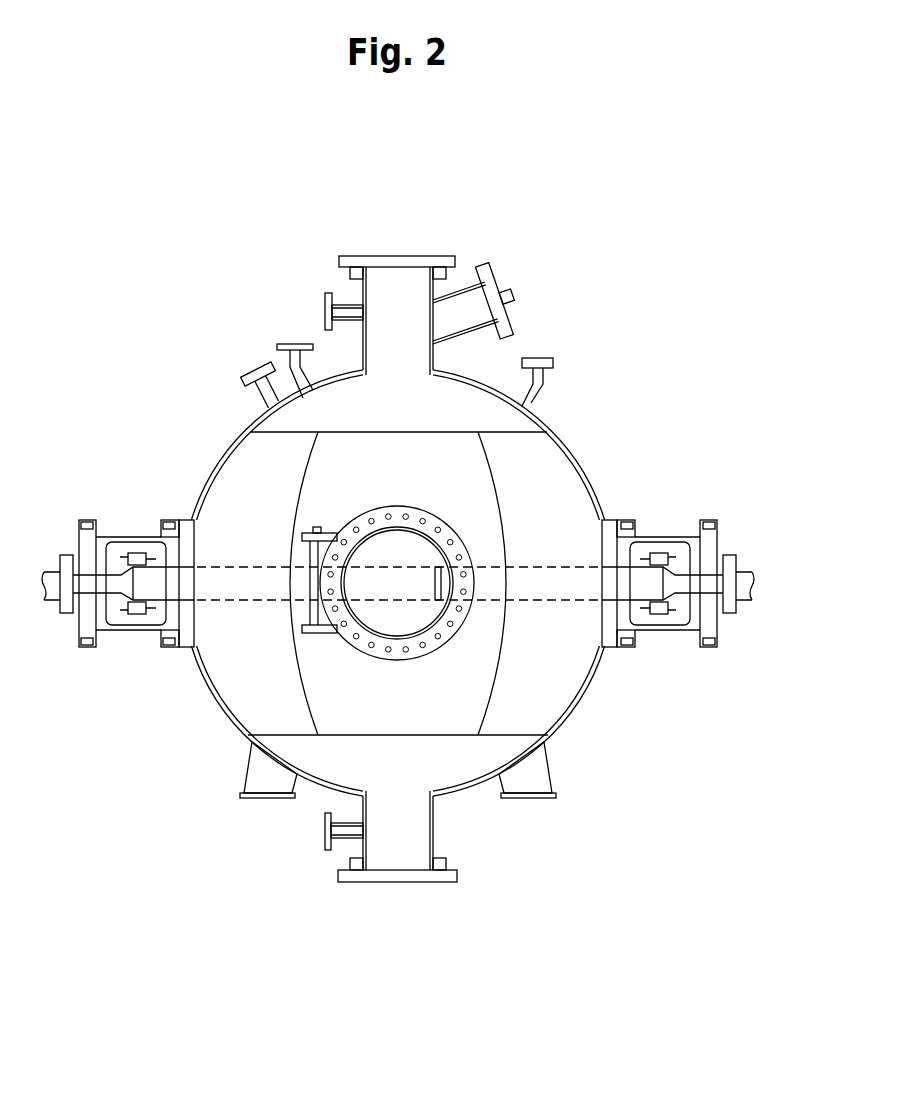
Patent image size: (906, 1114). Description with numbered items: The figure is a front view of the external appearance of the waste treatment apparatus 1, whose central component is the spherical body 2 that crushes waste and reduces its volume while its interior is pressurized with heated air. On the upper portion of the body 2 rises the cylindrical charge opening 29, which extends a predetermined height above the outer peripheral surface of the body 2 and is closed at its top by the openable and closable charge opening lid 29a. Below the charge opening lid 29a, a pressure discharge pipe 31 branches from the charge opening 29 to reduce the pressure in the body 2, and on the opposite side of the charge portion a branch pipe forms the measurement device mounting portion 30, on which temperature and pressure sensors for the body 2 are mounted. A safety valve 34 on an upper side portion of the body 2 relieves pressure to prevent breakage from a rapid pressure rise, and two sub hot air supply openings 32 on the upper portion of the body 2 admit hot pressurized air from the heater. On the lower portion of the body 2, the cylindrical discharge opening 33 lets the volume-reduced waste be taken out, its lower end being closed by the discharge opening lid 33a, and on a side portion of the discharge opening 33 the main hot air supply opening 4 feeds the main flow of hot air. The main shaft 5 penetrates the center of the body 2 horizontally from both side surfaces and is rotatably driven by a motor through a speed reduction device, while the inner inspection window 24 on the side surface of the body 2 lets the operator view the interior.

The waste treatment apparatus 1 is at (601, 245).
The body 2 is at (566, 446).
The main hot air supply opening 4 is at (325, 830).
The main shaft 5 is at (749, 574).
The inner inspection window 24 is at (367, 613).
The charge opening 29 is at (403, 278).
The charge opening lid 29a is at (353, 256).
The measurement device mounting portion 30 is at (473, 296).
The pressure discharge pipe 31 is at (326, 312).
The sub hot air supply openings 32 is at (295, 345).
The discharge opening 33 is at (400, 866).
The discharge opening lid 33a is at (443, 884).
The safety valve 34 is at (250, 374).